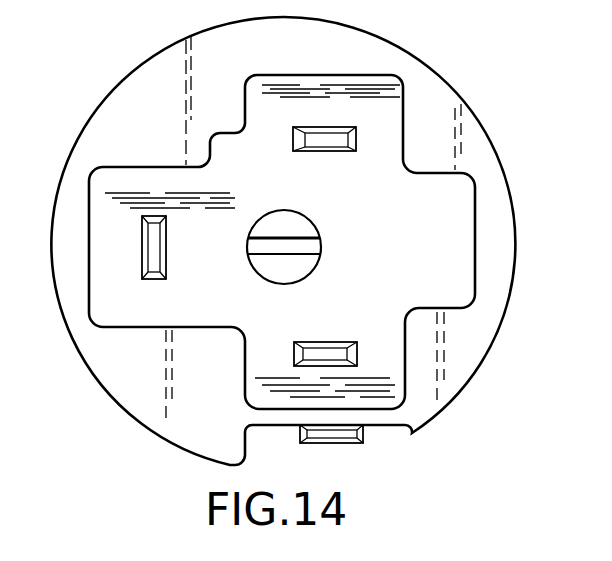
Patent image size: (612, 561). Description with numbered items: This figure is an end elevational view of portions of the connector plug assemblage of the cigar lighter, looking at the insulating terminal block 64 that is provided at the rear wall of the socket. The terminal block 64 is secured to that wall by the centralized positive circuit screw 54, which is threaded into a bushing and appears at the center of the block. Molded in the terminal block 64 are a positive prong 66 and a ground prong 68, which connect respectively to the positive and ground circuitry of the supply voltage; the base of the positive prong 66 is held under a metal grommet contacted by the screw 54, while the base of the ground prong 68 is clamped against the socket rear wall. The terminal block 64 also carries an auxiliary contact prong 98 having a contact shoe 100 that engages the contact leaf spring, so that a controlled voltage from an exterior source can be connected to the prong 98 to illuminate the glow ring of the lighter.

The positive circuit screw 54 is at (283, 246).
The insulating terminal block 64 is at (186, 63).
The positive prong 66 is at (335, 147).
The ground prong 68 is at (157, 248).
The auxiliary contact prong 98 is at (328, 352).
The contact shoe 100 is at (343, 443).